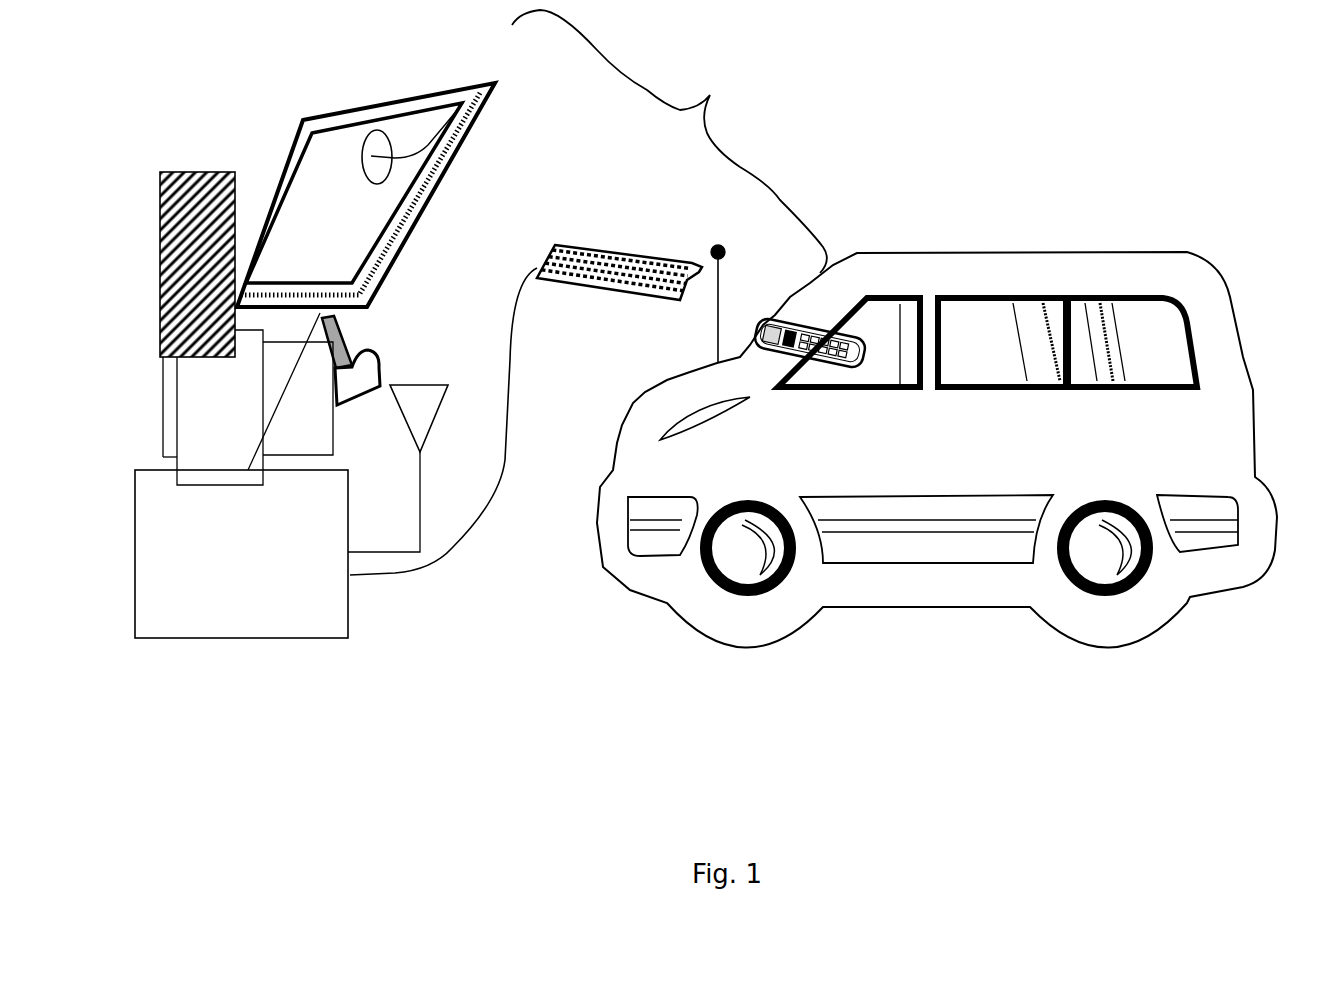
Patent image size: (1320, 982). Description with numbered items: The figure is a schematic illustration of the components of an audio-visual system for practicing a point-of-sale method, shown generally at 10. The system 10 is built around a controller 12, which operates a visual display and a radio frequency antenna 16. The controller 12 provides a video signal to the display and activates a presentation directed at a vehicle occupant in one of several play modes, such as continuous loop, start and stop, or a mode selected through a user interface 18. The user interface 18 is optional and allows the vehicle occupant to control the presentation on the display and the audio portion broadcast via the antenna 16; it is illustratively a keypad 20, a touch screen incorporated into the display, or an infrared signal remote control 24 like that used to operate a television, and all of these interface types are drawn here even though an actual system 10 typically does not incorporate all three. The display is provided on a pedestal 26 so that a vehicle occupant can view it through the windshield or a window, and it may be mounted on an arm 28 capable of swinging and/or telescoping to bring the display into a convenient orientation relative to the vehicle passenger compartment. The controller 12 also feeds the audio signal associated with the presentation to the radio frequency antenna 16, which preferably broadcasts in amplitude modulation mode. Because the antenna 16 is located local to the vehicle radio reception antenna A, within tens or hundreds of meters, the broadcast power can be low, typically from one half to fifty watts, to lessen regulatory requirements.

The system 10 is at (278, 722).
The controller 12 is at (242, 581).
The radio frequency antenna 16 is at (398, 468).
The user interface 18 is at (669, 141).
The keypad 20 is at (526, 385).
The infrared signal remote control 24 is at (810, 316).
The pedestal 26 is at (170, 172).
The arm 28 is at (253, 290).
The vehicle radio reception antenna A is at (724, 286).